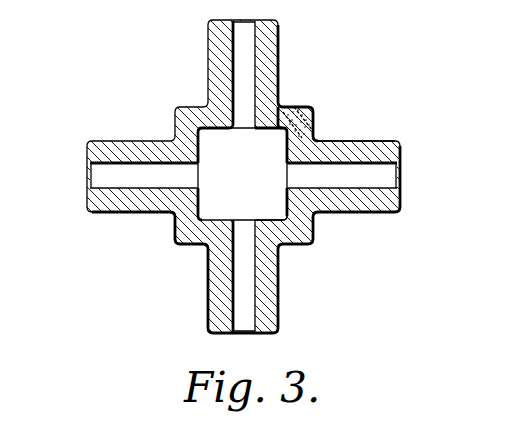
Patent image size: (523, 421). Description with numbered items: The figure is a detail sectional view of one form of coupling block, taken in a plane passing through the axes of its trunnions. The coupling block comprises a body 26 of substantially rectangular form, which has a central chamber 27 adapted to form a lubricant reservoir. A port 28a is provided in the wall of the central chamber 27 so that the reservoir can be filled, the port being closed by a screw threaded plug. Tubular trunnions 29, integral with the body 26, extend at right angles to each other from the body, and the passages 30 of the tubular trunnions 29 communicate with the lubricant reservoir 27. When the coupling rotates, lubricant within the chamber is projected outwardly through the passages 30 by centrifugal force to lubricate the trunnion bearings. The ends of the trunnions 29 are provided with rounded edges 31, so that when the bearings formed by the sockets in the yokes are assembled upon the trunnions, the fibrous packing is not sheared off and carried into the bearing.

The body 26 is at (298, 232).
The central chamber 27 is at (220, 210).
The port 28a is at (313, 112).
The tubular trunnions 29 is at (353, 145).
The passages 30 is at (360, 182).
The rounded edges 31 is at (208, 22).